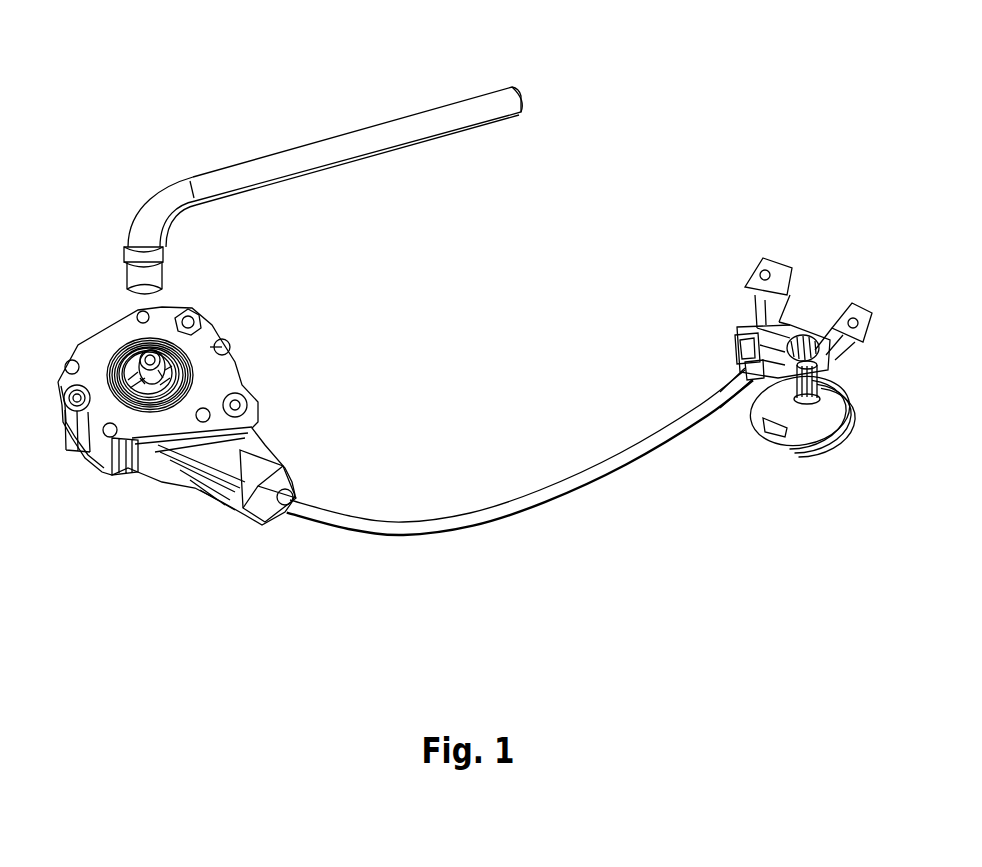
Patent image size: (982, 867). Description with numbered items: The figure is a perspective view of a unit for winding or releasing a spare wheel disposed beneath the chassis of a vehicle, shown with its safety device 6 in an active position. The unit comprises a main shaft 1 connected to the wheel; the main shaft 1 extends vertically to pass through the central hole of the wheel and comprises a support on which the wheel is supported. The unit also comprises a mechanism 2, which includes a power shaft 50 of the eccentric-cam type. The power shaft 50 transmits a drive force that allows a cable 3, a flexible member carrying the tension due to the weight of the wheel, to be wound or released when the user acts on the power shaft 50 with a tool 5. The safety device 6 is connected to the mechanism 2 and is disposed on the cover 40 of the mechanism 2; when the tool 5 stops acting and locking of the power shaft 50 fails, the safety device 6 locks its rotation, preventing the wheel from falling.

The main shaft 1 is at (823, 260).
The mechanism 2 is at (313, 297).
The cable 3 is at (515, 478).
The tool 5 is at (311, 100).
The safety device 6 is at (193, 382).
The cover 40 is at (210, 347).
The power shaft 50 is at (152, 360).